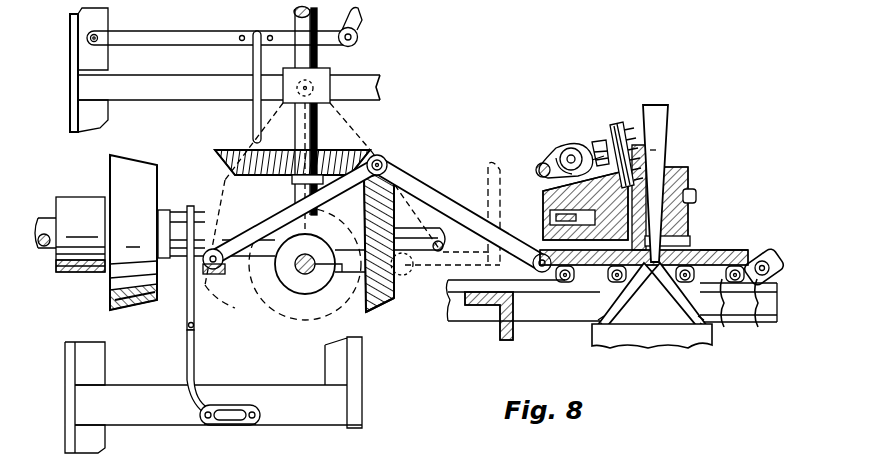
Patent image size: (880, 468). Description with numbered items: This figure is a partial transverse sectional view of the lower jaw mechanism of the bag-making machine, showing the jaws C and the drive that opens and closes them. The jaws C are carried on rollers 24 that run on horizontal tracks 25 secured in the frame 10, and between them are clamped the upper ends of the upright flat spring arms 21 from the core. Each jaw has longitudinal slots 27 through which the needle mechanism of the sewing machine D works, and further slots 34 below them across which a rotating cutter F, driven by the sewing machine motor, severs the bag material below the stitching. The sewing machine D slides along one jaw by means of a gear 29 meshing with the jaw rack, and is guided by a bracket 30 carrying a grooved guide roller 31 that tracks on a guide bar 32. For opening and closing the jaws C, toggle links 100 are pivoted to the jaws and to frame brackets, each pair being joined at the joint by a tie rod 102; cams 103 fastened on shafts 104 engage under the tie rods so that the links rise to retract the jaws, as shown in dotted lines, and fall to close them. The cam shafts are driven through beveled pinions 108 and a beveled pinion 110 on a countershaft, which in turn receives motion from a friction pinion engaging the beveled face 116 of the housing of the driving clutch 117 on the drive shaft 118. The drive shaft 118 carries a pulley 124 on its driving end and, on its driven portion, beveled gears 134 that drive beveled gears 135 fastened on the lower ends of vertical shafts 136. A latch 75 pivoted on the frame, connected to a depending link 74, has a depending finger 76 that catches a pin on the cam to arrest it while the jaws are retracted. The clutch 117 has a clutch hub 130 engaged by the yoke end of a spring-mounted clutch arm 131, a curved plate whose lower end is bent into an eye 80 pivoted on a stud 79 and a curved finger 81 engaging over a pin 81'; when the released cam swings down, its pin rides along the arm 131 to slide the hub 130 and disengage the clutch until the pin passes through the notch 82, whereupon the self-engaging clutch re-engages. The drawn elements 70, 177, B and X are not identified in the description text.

The frame 10 is at (72, 90).
The flat spring arms 21 is at (668, 301).
The rollers 24 is at (728, 330).
The horizontal tracks 25 is at (760, 328).
The longitudinal slots 27 is at (690, 186).
The gear 29 is at (622, 128).
The bracket 30 is at (597, 142).
The grooved guide roller 31 is at (560, 154).
The guide bar 32 is at (536, 168).
The longitudinal slots 34 is at (666, 250).
The base 70 is at (512, 338).
The depending links 74 is at (363, 22).
The latches 75 is at (196, 34).
The depending finger 76 is at (252, 118).
The stud 79 is at (203, 413).
The eye 80 is at (212, 426).
The curved finger 81 is at (241, 395).
The pin 81' is at (268, 431).
The notch 82 is at (198, 356).
The toggle links 100 is at (264, 256).
The tie rod 102 is at (396, 164).
The cams 103 is at (316, 304).
The shafts 104 is at (336, 276).
The beveled pinions 108 is at (558, 465).
The beveled pinion 110 is at (246, 467).
The beveled face 116 is at (112, 308).
The driving clutch 117 is at (150, 188).
The drive shaft 118 is at (418, 270).
The pulley 124 is at (80, 272).
The clutch hub 130 is at (206, 191).
The clutch arm 131 is at (196, 327).
The beveled gears 134 is at (382, 312).
The beveled gears 135 is at (348, 152).
The vertical shafts 136 is at (330, 62).
The slot 177 is at (550, 219).
The base plate B is at (652, 342).
The jaws C is at (744, 248).
The sewing machine D is at (542, 193).
The rotating cutter F is at (664, 240).
The blade X is at (670, 131).